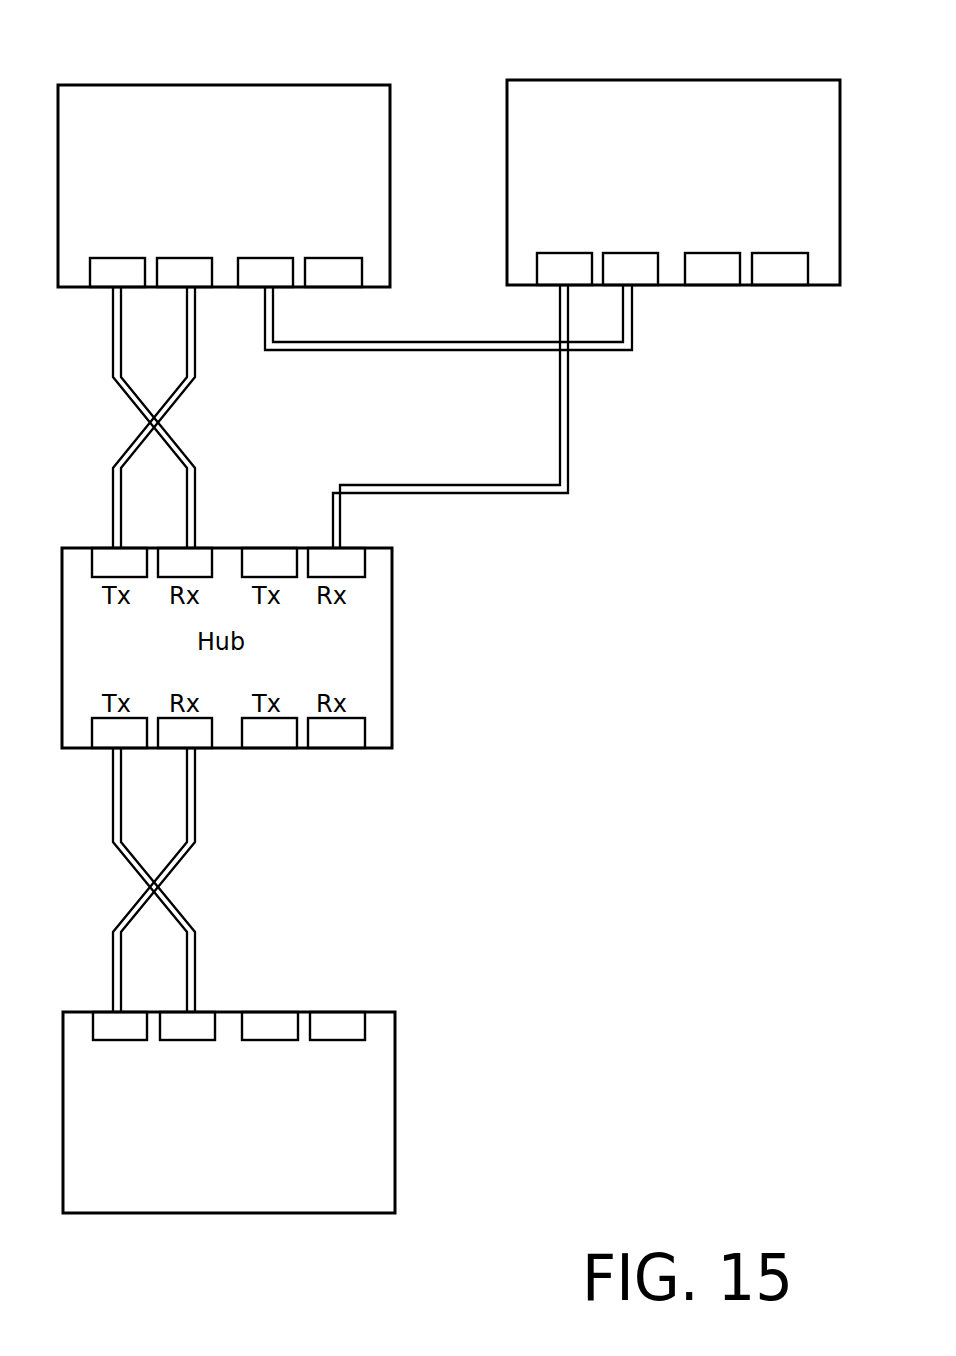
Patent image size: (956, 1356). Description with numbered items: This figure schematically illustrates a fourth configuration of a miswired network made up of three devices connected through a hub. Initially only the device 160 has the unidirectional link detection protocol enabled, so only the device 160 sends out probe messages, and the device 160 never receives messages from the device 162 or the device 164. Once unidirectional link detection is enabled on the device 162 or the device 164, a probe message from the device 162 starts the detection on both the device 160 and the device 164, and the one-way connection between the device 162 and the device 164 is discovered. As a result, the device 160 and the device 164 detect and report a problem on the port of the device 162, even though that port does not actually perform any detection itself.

The device 164 is at (197, 85).
The device 162 is at (668, 80).
The device 160 is at (395, 1092).